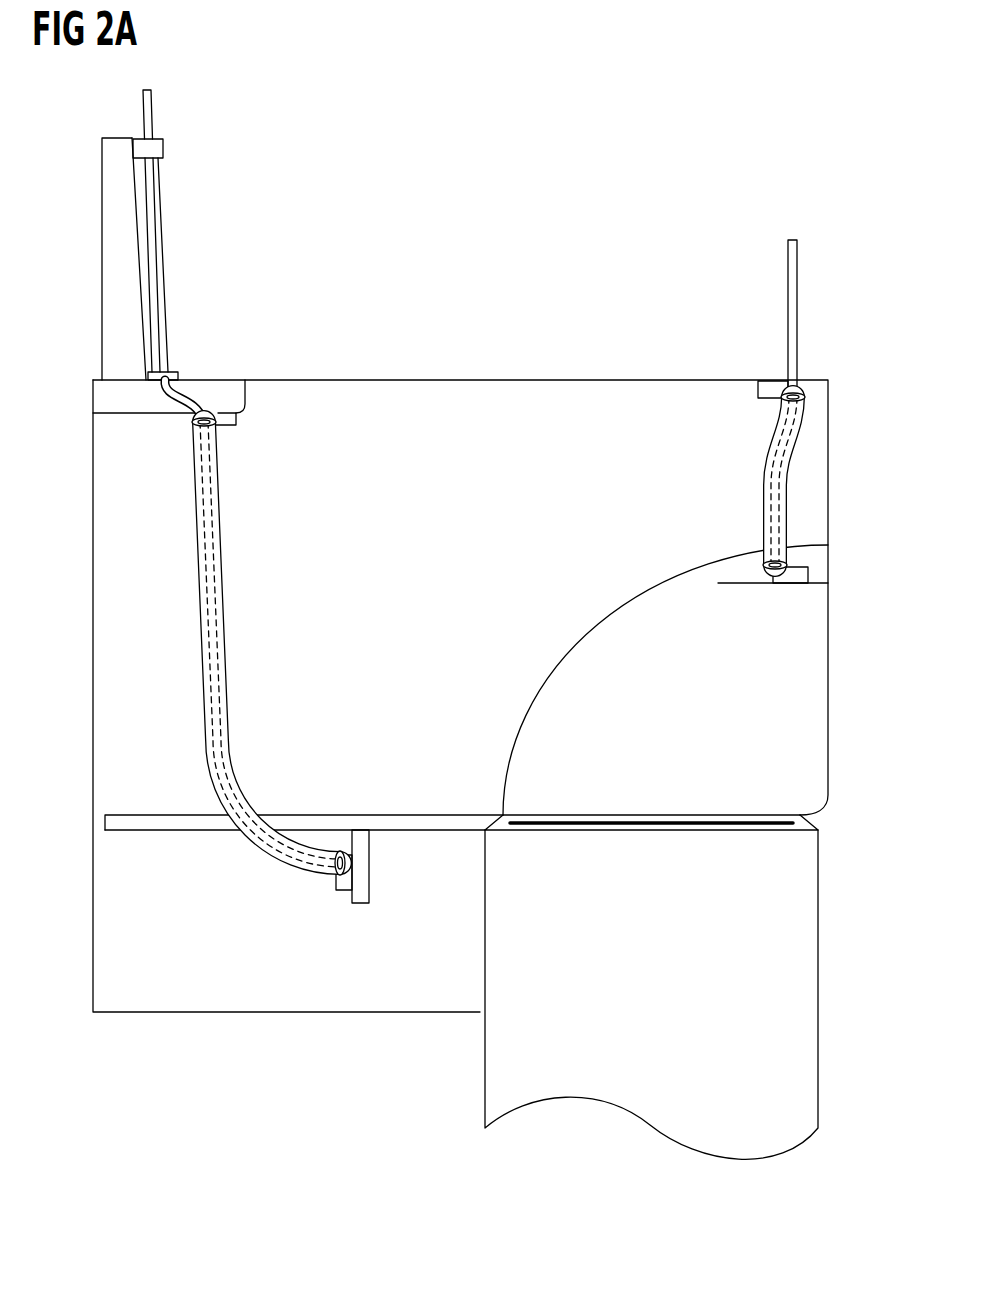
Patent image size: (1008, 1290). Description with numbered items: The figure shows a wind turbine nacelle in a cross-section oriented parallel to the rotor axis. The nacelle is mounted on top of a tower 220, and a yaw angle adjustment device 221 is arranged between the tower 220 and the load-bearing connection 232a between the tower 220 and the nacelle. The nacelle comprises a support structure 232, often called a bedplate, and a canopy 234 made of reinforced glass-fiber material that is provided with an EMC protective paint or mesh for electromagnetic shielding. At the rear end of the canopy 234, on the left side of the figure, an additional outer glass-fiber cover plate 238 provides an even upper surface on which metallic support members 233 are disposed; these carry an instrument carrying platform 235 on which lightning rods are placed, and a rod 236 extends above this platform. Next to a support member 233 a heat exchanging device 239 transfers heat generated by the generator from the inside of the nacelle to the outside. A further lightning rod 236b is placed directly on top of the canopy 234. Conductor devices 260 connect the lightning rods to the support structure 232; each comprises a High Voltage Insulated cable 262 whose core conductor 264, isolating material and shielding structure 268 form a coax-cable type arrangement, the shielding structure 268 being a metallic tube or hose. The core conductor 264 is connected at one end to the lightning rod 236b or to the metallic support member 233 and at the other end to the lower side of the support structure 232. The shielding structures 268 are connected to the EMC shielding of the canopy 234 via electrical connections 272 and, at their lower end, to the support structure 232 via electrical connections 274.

The tower 220 is at (812, 1052).
The yaw angle adjustment device 221 is at (655, 830).
The support structure 232 is at (135, 822).
The load-bearing connection 232a is at (598, 633).
The metallic support member 233 is at (160, 232).
The canopy 234 is at (458, 380).
The instrument carrying platform 235 is at (163, 150).
The rod 236 is at (151, 97).
The lightning rod 236b is at (797, 258).
The outer glass-fiber cover plate 238 is at (230, 380).
The heat exchanging device 239 is at (102, 258).
The conductor device 260 is at (253, 587).
The High Voltage Insulated cable 262 is at (182, 400).
The core conductor 264 is at (157, 393).
The shielding structure 268 is at (218, 470).
The electrical connection 272 is at (232, 428).
The electrical connection 274 is at (337, 882).